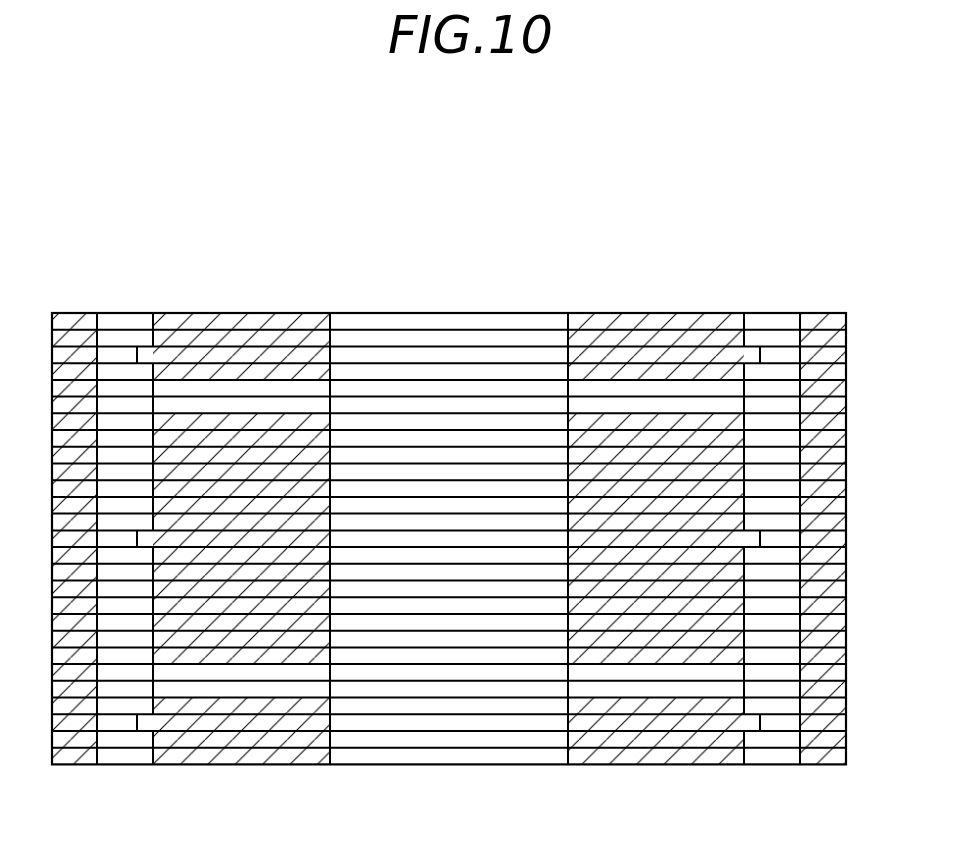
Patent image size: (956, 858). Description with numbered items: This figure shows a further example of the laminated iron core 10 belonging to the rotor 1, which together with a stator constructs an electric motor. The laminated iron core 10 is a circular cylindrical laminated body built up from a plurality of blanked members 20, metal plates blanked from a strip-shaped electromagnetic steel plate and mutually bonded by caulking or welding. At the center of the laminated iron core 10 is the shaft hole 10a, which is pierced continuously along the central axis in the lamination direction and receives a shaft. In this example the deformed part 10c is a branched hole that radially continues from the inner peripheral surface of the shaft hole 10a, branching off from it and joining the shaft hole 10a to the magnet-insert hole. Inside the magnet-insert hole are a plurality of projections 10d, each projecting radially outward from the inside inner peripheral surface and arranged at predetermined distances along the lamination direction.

The rotor 1 is at (708, 240).
The laminated iron core 10 is at (99, 250).
The shaft hole 10a is at (535, 296).
The deformed part 10c is at (252, 380).
The projection 10d is at (146, 346).
The blanked member 20 is at (728, 758).